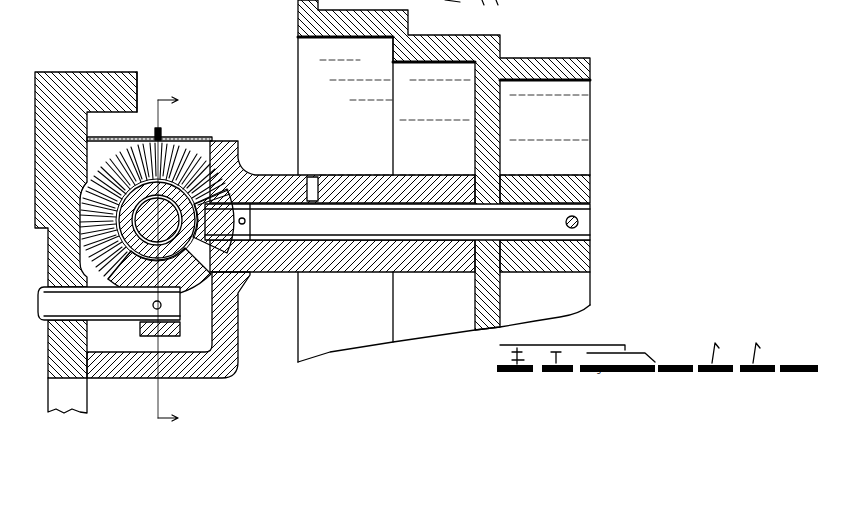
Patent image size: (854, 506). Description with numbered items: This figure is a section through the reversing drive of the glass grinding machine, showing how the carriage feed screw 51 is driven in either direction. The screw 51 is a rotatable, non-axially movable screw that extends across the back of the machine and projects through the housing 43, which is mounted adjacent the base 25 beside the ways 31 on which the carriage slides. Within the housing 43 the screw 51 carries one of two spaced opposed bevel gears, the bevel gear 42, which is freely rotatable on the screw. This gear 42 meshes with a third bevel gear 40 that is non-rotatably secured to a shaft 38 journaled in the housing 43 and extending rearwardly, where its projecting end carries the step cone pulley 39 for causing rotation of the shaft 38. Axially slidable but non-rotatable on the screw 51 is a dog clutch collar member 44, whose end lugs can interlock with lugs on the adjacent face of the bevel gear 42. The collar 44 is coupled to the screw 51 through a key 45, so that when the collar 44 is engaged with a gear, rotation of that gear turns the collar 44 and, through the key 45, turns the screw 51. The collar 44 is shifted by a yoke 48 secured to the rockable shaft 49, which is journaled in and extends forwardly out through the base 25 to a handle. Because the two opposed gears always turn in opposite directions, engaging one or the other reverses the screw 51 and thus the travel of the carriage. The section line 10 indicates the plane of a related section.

The section line 10- 10 is at (179, 260).
The base 25 is at (58, 93).
The ways 31 is at (112, 72).
The shaft 38 is at (578, 233).
The step cone pulley 39 is at (480, 40).
The third bevel gear 40 is at (260, 168).
The bevel gear 42 is at (160, 172).
The housing 43 is at (222, 367).
The dog clutch collar member 44 is at (178, 190).
The key 45 is at (94, 173).
The yoke 48 is at (178, 332).
The rockable shaft 49 is at (107, 318).
The screw 51 is at (157, 220).